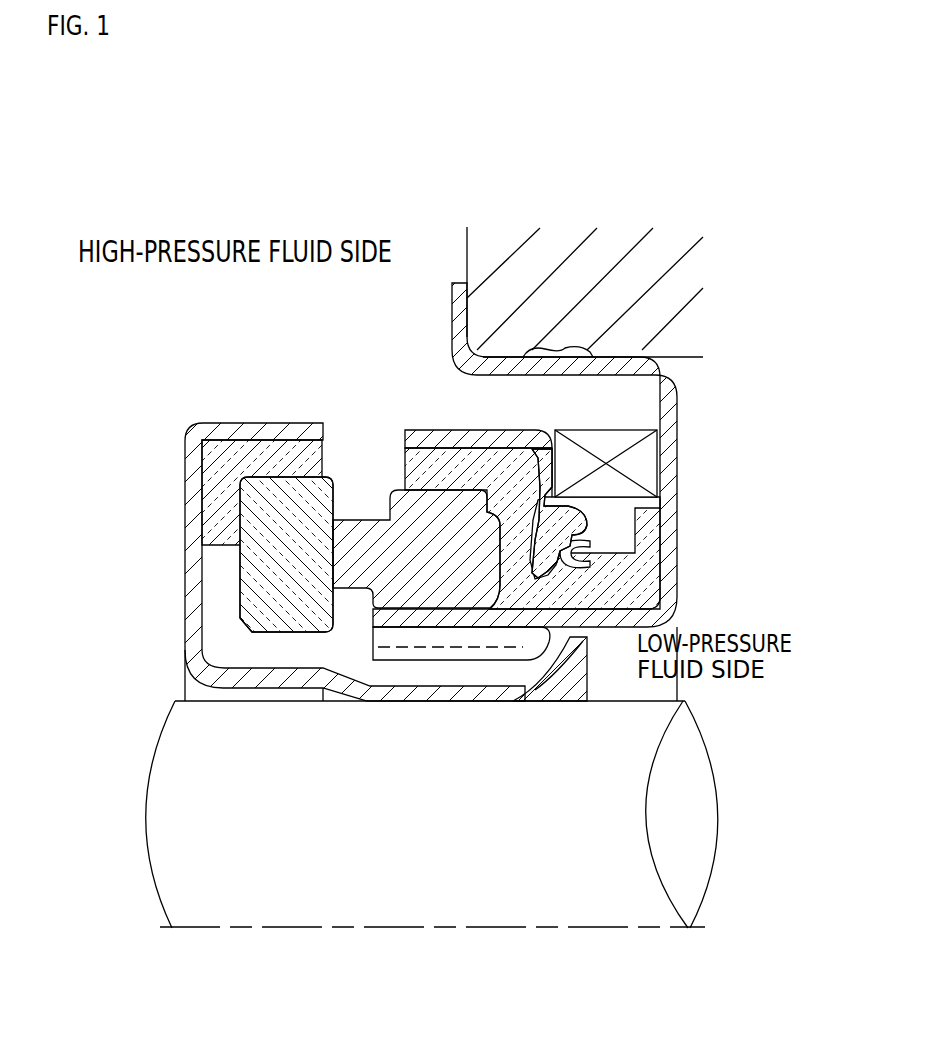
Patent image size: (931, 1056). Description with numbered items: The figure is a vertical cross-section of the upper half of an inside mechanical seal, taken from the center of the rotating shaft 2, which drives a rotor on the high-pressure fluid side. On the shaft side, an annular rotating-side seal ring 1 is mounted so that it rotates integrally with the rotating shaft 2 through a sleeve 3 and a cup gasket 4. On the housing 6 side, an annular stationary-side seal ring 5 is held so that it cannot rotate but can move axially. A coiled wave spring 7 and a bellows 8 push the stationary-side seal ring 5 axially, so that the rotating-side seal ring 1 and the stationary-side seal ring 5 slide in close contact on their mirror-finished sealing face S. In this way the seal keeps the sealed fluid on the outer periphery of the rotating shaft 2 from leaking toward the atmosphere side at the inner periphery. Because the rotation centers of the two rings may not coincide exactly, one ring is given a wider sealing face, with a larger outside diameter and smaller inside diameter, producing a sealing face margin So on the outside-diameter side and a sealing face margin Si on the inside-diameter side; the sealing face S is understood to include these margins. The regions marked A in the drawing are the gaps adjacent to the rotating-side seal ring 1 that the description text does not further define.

The rotating-side seal ring 1 is at (277, 623).
The rotating shaft 2 is at (432, 814).
The sleeve 3 is at (185, 547).
The cup gasket 4 is at (268, 453).
The stationary-side seal ring 5 is at (457, 567).
The housing 6 is at (600, 248).
The coiled wave spring 7 is at (677, 482).
The bellows 8 is at (483, 432).
The sealing face margin on the outside-diameter side So is at (335, 505).
The sealing face margin on the inside-diameter side Si is at (393, 610).
The sealing face S is at (347, 548).
The gap A is at (351, 560).